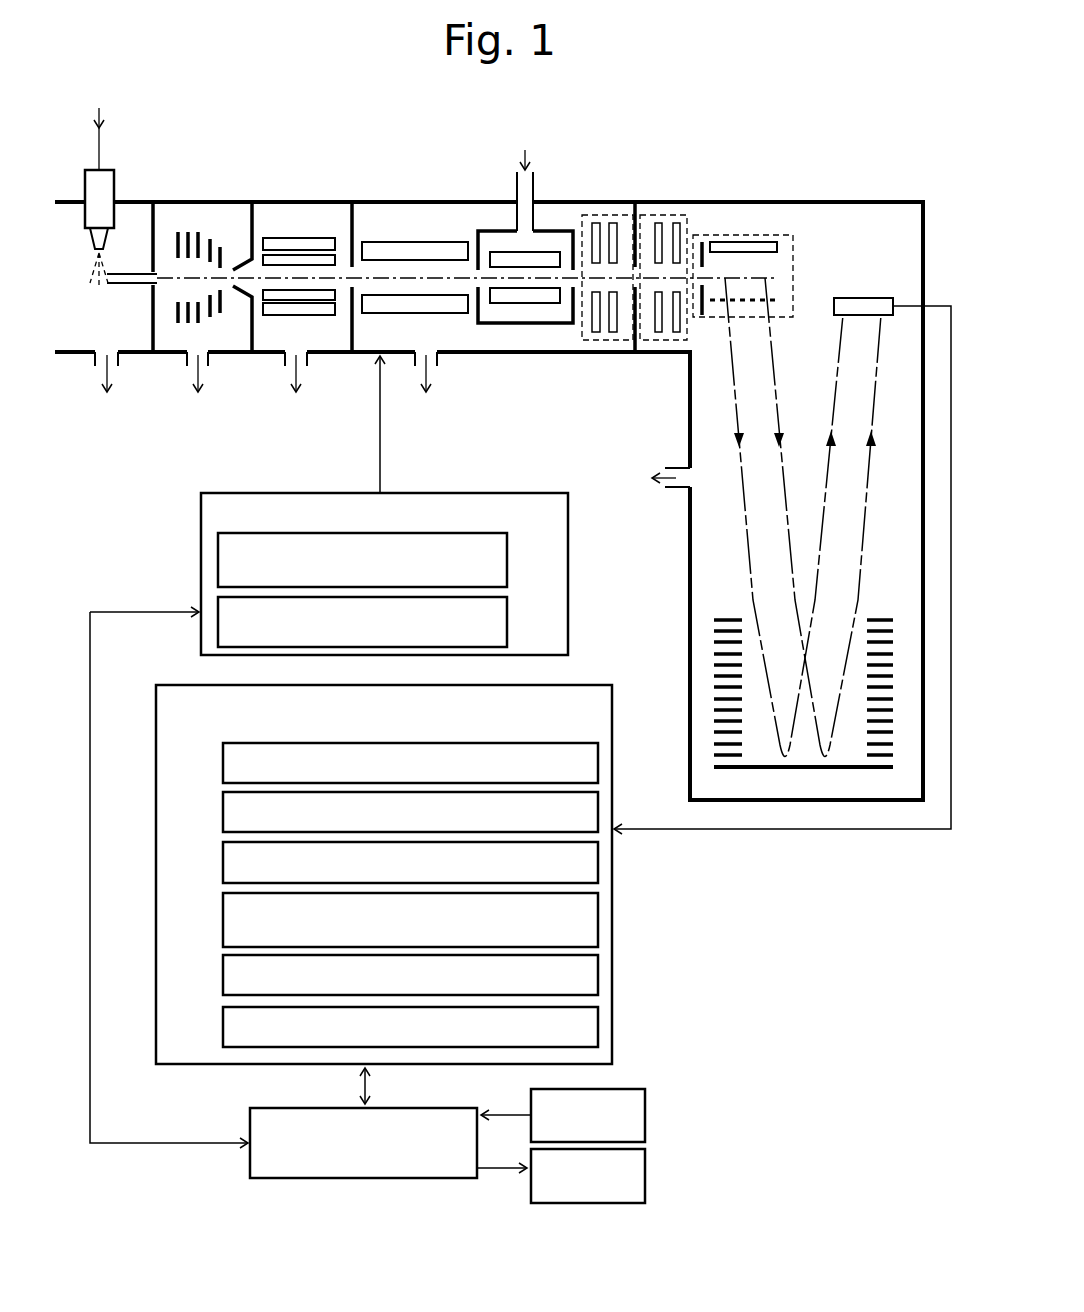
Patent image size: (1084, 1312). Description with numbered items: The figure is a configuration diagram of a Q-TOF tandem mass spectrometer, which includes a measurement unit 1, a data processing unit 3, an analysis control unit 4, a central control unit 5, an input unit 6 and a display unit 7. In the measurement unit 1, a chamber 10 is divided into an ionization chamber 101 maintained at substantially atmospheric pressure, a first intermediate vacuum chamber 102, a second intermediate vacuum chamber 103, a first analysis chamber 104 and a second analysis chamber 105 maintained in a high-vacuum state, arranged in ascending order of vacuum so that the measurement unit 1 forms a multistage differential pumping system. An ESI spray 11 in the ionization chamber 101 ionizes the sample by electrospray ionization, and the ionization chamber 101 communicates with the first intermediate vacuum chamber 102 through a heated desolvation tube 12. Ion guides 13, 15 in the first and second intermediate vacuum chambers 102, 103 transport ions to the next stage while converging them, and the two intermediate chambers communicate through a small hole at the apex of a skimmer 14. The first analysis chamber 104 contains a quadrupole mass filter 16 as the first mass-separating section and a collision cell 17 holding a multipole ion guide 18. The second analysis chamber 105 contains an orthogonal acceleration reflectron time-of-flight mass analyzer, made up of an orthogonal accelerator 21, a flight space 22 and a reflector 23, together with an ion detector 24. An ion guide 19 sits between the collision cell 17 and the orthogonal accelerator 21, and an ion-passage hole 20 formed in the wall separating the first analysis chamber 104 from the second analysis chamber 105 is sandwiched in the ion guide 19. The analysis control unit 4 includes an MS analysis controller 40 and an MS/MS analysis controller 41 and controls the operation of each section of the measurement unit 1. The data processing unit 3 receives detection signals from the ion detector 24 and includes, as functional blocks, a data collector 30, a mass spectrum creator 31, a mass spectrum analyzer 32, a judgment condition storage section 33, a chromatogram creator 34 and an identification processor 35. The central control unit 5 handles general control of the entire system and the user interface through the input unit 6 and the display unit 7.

The measurement unit 1 is at (850, 152).
The data processing unit 3 is at (156, 728).
The analysis control unit 4 is at (201, 518).
The central control unit 5 is at (250, 1120).
The input unit 6 is at (645, 1118).
The display unit 7 is at (645, 1172).
The chamber 10 is at (368, 202).
The ESI spray 11 is at (86, 170).
The heated desolvation tube 12 is at (125, 272).
The ion guide 13 is at (200, 228).
The skimmer 14 is at (240, 265).
The ion guide 15 is at (303, 235).
The quadrupole mass filter 16 is at (403, 242).
The collision cell 17 is at (490, 230).
The multipole ion guide 18 is at (540, 250).
The ion guide 19 is at (685, 213).
The ion-passage hole 20 is at (641, 270).
The orthogonal accelerator 21 is at (757, 233).
The flight space 22 is at (821, 379).
The reflector 23 is at (710, 636).
The ion detector 24 is at (893, 298).
The data collector 30 is at (222, 765).
The mass spectrum creator 31 is at (222, 815).
The mass spectrum analyzer 32 is at (222, 865).
The judgment condition storage section 33 is at (222, 918).
The chromatogram creator 34 is at (222, 977).
The identification processor 35 is at (222, 1028).
The MS analysis controller 40 is at (507, 560).
The MS/MS analysis controller 41 is at (507, 618).
The ionization chamber 101 is at (87, 347).
The first intermediate vacuum chamber 102 is at (178, 347).
The second intermediate vacuum chamber 103 is at (270, 347).
The first analysis chamber 104 is at (515, 347).
The second analysis chamber 105 is at (655, 347).